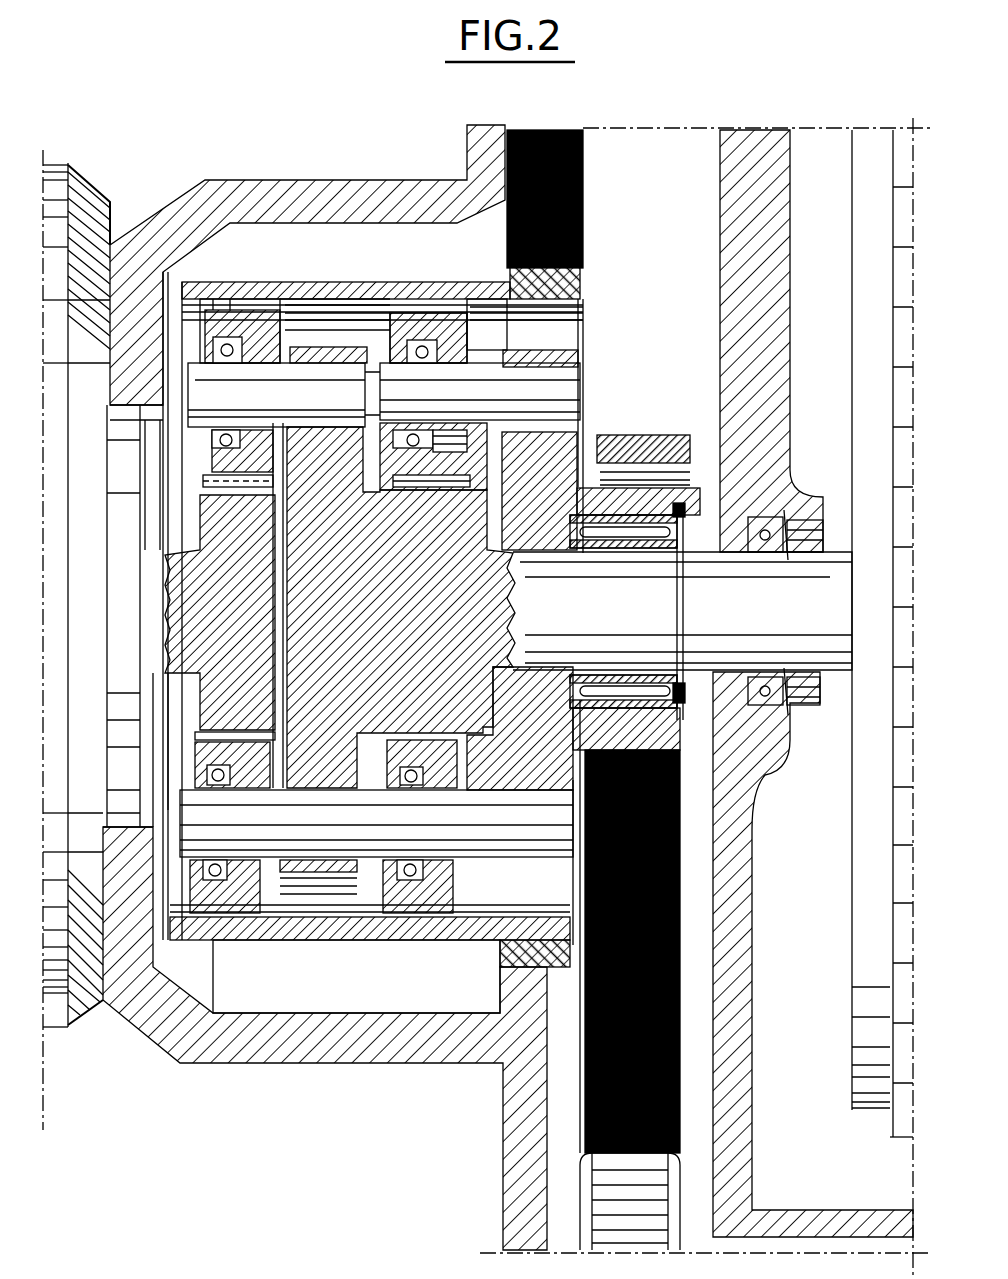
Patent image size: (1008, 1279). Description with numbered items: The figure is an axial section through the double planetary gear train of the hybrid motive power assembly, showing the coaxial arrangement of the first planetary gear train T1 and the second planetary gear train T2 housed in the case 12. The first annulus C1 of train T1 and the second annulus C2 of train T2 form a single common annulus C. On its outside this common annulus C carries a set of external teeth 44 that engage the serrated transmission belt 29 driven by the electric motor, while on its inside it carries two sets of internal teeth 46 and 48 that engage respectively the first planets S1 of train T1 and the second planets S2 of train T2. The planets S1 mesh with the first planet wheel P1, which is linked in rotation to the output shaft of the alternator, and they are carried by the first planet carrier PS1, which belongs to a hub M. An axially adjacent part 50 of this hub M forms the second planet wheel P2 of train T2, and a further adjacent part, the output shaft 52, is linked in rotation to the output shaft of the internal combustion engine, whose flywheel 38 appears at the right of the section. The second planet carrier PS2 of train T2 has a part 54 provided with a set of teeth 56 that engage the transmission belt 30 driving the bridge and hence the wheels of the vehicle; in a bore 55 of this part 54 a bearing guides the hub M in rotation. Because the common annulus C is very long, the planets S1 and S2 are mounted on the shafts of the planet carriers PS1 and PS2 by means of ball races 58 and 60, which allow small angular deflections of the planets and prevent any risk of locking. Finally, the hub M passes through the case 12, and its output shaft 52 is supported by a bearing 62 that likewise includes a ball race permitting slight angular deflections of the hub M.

The case 12 is at (745, 198).
The serrated transmission belt 29 is at (583, 215).
The transmission belt 30 is at (680, 935).
The flywheel 38 is at (870, 225).
The set of external teeth 44 is at (583, 312).
The set of internal teeth 46 is at (270, 300).
The set of internal teeth 48 is at (450, 299).
The axially adjacent part of hub 50 is at (465, 790).
The output shaft of hub 52 is at (655, 612).
The part of planet carrier PS2 54 is at (655, 505).
The bore 55 is at (698, 668).
The set of teeth 56 is at (625, 435).
The ball race 58 is at (220, 468).
The ball race 60 is at (448, 352).
The bearing 62 is at (778, 520).
The common annulus C is at (358, 288).
The first annulus C1 is at (232, 300).
The second annulus C2 is at (420, 313).
The first planets S1 is at (262, 333).
The second planets S2 is at (465, 320).
The first planet carrier PS1 is at (300, 338).
The second planet carrier PS2 is at (583, 352).
The first planet wheel P1 is at (255, 608).
The second planet wheel P2 is at (395, 520).
The hub M is at (335, 608).
The first planetary gear train T1 is at (188, 952).
The second planetary gear train T2 is at (405, 950).